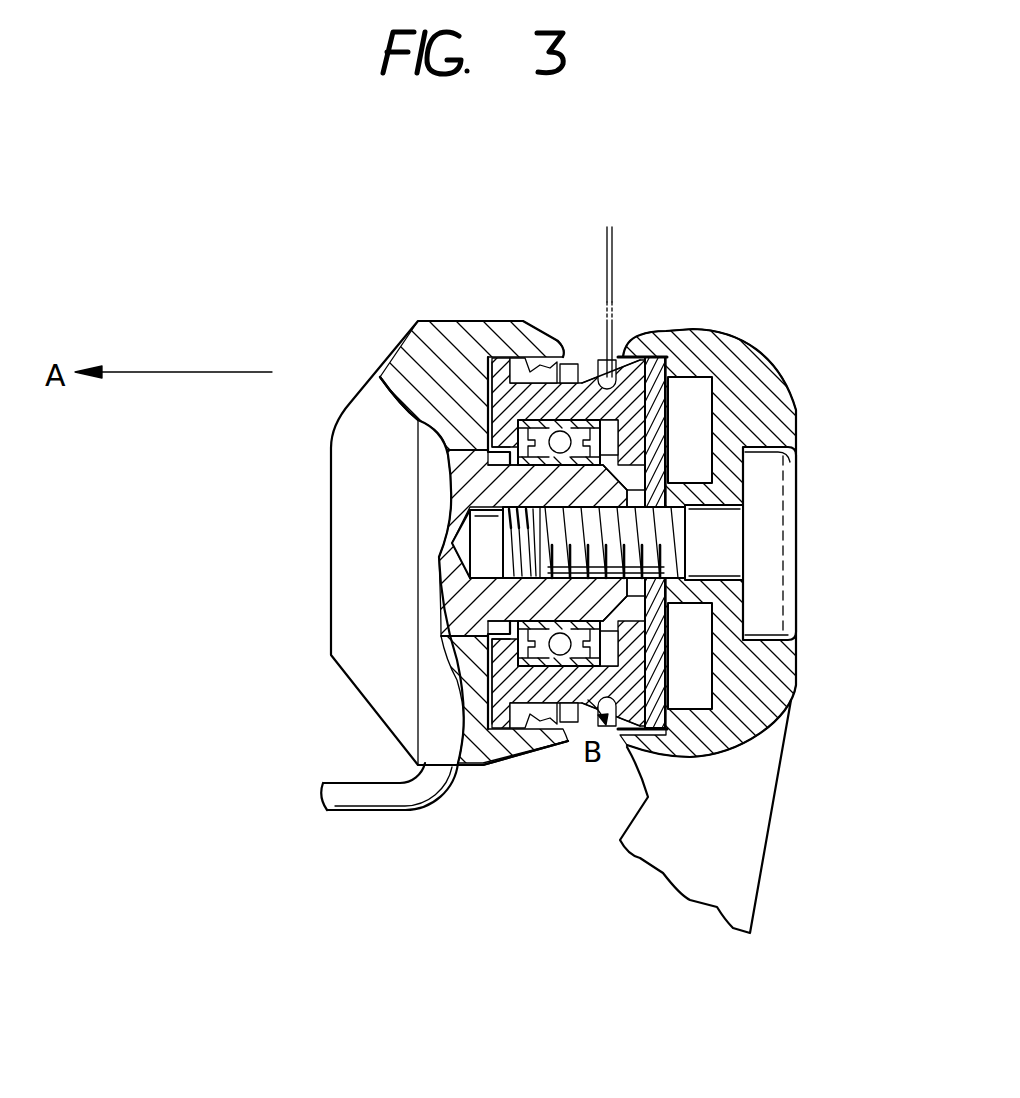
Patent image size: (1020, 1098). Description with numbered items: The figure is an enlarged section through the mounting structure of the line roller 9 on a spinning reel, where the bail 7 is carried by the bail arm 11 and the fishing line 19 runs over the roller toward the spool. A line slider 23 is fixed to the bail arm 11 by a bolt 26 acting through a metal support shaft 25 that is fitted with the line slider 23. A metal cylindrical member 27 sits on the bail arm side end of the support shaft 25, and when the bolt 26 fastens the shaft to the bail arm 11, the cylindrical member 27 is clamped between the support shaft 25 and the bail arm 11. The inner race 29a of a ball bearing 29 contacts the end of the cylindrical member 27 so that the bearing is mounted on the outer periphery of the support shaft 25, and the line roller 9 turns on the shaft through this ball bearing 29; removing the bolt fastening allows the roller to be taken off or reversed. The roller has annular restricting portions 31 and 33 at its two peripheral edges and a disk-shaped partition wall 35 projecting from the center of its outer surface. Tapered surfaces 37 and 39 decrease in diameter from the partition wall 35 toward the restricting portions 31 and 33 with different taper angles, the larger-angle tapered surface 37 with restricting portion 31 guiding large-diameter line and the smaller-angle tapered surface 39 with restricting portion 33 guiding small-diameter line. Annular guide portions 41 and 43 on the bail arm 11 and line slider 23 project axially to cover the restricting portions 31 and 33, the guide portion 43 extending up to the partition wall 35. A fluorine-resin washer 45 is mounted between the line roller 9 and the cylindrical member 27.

The bail 7 is at (330, 802).
The line roller 9 is at (485, 406).
The bail arm 11 is at (778, 777).
The fishing line 19 is at (613, 252).
The line slider 23 is at (340, 583).
The support shaft 25 is at (457, 505).
The bolt 26 is at (777, 538).
The cylindrical member 27 is at (668, 670).
The ball bearing 29 is at (500, 435).
The inner race 29a is at (520, 607).
The restricting portion 31 is at (668, 377).
The restricting portion 33 is at (545, 338).
The partition wall 35 is at (576, 358).
The tapered surface 37 is at (603, 345).
The tapered surface 39 is at (380, 376).
The guide portion 41 is at (625, 352).
The guide portion 43 is at (557, 348).
The washer 45 is at (668, 417).